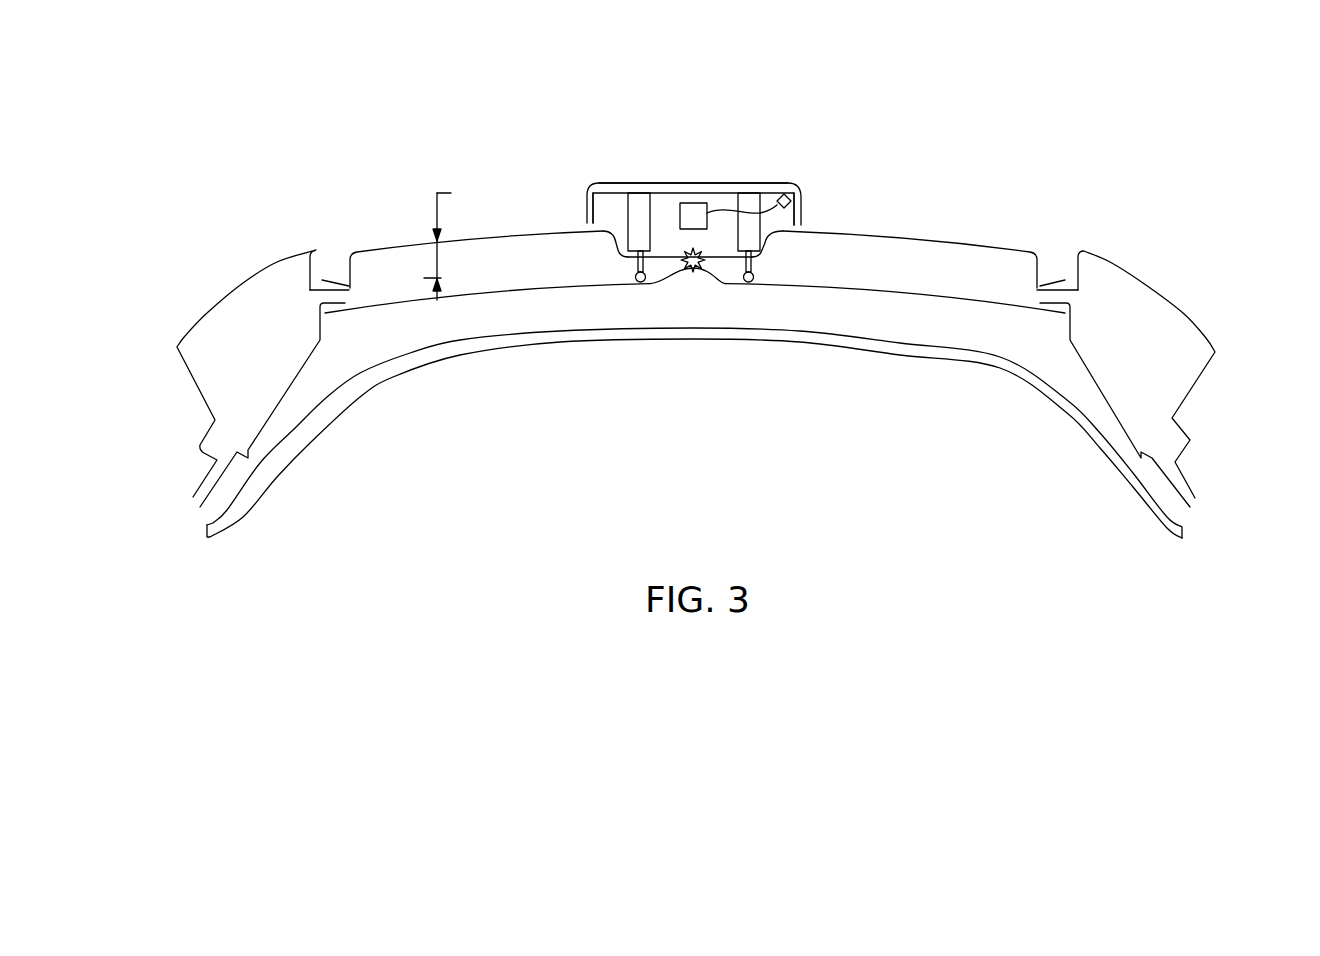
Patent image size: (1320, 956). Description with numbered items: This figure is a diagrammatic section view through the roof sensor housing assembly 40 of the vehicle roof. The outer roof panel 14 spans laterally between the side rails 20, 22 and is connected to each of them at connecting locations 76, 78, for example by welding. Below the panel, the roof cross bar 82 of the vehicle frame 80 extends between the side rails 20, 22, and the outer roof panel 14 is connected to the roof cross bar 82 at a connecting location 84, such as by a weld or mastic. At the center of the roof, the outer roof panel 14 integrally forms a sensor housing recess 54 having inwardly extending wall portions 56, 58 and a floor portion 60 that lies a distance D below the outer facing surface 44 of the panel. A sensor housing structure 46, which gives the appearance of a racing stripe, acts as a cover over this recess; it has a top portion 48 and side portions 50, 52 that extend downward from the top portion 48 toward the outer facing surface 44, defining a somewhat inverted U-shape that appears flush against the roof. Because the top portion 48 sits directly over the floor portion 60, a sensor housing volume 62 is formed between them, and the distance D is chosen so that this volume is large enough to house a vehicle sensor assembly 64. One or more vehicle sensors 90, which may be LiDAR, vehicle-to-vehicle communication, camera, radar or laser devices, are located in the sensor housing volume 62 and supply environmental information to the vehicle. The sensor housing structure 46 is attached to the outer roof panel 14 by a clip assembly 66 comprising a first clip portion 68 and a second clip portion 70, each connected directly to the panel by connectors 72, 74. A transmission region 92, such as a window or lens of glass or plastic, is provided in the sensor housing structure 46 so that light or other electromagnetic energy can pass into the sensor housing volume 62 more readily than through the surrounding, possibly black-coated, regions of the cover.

The outer roof panel 14 is at (388, 238).
The side rail 20 is at (1181, 328).
The side rail 22 is at (209, 356).
The roof sensor housing assembly 40 is at (763, 113).
The outer facing surface 44 is at (962, 232).
The sensor housing structure 46 is at (789, 176).
The top portion 48 is at (641, 191).
The side portion 50 is at (587, 200).
The side portion 52 is at (803, 213).
The sensor housing recess 54 is at (779, 253).
The inwardly extending wall portion 56 is at (618, 233).
The inwardly extending wall portion 58 is at (780, 234).
The floor portion 60 is at (714, 262).
The sensor housing volume 62 is at (664, 213).
The vehicle sensor assembly 64 is at (703, 201).
The clip assembly 66 is at (611, 204).
The first clip portion 68 is at (634, 192).
The second clip portion 70 is at (749, 190).
The connector 72 is at (636, 280).
The connector 74 is at (748, 284).
The connecting location 76 is at (337, 255).
The connecting location 78 is at (1059, 256).
The vehicle frame 80 is at (1205, 456).
The roof cross bar 82 is at (937, 303).
The connecting location 84 is at (683, 302).
The vehicle sensor 90 is at (680, 263).
The transmission region 92 is at (800, 190).
The distance D is at (447, 240).